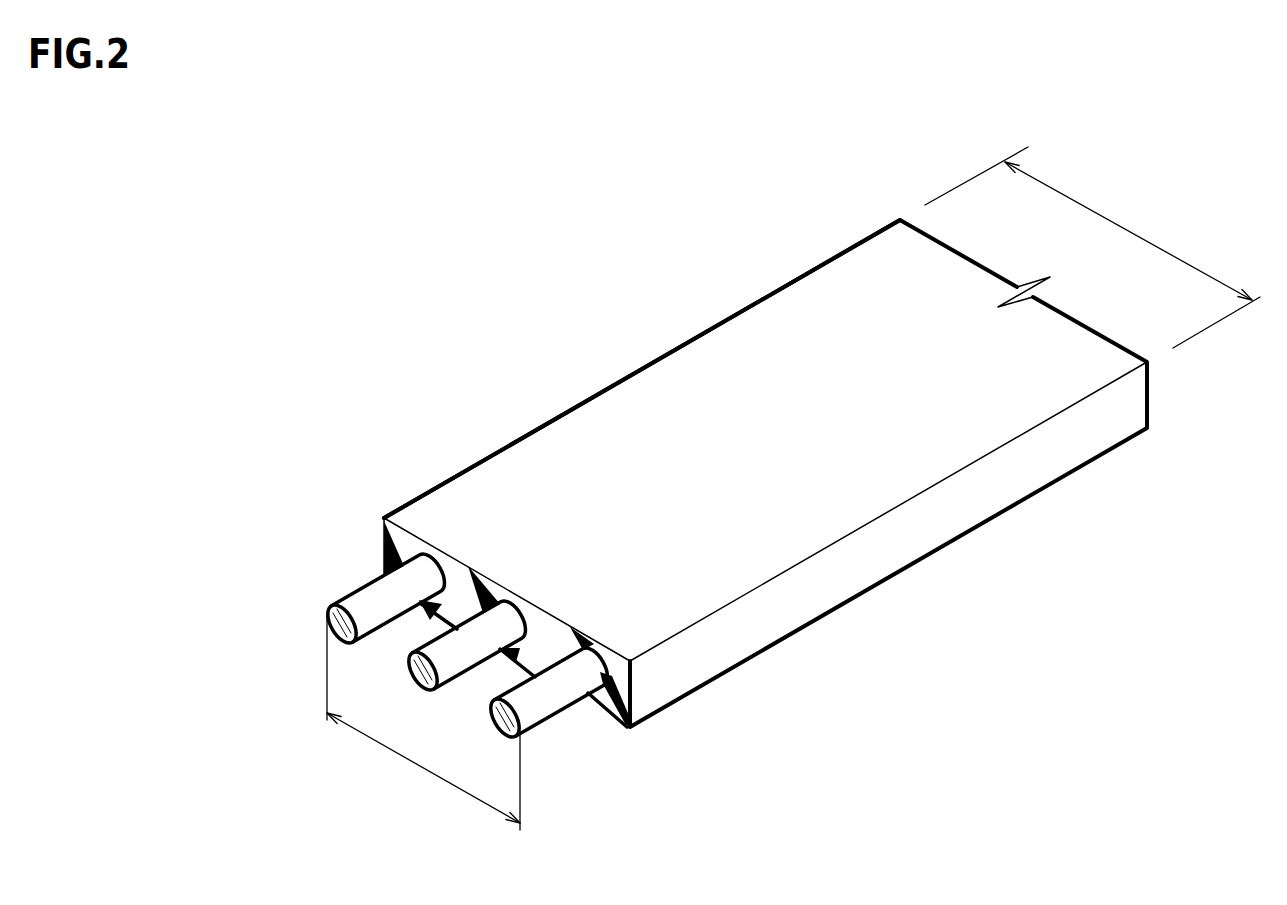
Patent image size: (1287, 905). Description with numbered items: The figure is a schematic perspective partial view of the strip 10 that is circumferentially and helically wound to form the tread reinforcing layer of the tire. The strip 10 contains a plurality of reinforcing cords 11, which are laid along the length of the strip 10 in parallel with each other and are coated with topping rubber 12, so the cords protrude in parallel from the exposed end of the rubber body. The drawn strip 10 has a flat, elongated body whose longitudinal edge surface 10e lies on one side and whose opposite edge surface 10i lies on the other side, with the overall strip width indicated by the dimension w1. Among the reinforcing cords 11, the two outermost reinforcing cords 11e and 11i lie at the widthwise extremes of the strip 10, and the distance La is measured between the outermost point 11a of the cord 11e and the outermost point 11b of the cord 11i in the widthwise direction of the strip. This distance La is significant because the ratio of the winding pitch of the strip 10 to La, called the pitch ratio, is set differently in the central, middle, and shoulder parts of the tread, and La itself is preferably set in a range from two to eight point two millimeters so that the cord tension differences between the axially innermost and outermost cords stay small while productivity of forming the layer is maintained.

The strip 10 is at (785, 223).
The outer edge surface of flat cable 10e is at (652, 358).
The inner edge surface of flat cable 10i is at (927, 492).
The reinforcing cords 11 is at (470, 681).
The outermost reinforcing cord 11e is at (307, 573).
The outermost reinforcing cord 11i is at (627, 756).
The outermost point 11a is at (328, 608).
The outermost point 11b is at (523, 732).
The topping rubber 12 is at (455, 580).
The width of flat cable w1 is at (1092, 247).
The distance between outermost reinforcing cords La is at (423, 721).